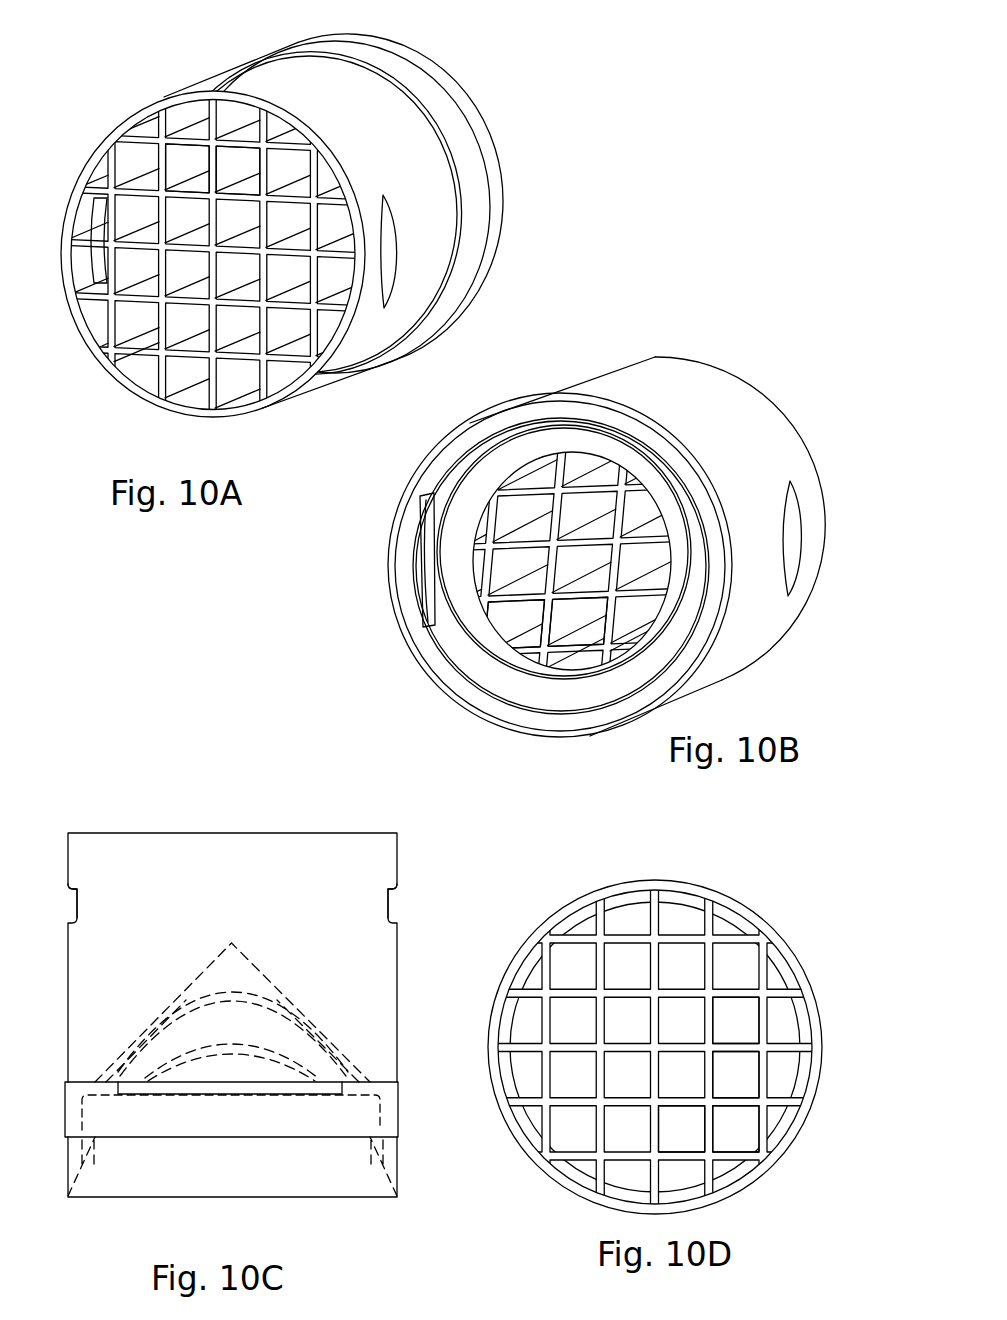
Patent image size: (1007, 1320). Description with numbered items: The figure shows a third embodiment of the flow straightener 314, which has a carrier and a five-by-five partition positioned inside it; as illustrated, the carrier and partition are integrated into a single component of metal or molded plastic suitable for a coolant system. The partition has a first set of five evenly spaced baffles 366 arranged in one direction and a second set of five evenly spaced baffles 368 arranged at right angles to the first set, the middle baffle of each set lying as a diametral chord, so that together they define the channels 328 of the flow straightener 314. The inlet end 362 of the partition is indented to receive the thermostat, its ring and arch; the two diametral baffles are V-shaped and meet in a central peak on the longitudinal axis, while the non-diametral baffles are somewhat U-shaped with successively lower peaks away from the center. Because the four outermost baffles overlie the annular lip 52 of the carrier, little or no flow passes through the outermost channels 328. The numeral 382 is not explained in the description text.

In FIG. 10A, the flow straightener 314 is at (92, 98).
In FIG. 10B, the flow straightener 314 is at (585, 351).
In FIG. 10C, the flow straightener 314 is at (151, 796).
In FIG. 10D, the flow straightener 314 is at (549, 894).
In FIG. 10A, the channels 328 is at (233, 282).
In FIG. 10B, the channels 328 is at (570, 560).
In FIG. 10D, the channels 328 is at (715, 1050).
In FIG. 10A, the baffles 366 is at (295, 253).
In FIG. 10B, the baffles 366 is at (633, 603).
In FIG. 10C, the baffles 366 is at (215, 1033).
In FIG. 10D, the baffles 366 is at (725, 1090).
In FIG. 10A, the baffles 368 is at (264, 171).
In FIG. 10B, the baffles 368 is at (610, 644).
In FIG. 10D, the baffles 368 is at (712, 1122).
In FIG. 10B, the inlet end 362 is at (492, 620).
In FIG. 10C, the inlet end 362 is at (278, 1063).
In FIG. 10C, the retention notches 382 is at (400, 900).
In FIG. 10D, the annular lip 52 is at (557, 990).